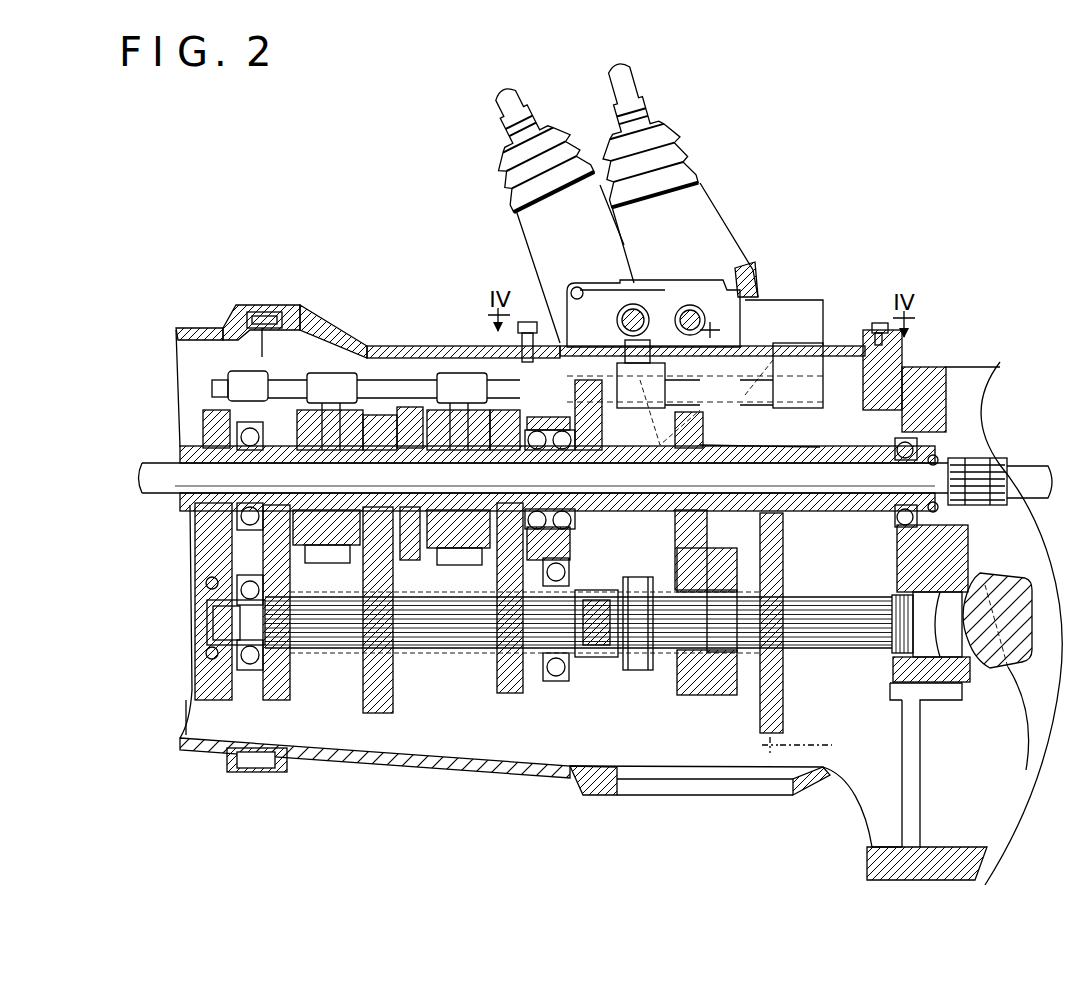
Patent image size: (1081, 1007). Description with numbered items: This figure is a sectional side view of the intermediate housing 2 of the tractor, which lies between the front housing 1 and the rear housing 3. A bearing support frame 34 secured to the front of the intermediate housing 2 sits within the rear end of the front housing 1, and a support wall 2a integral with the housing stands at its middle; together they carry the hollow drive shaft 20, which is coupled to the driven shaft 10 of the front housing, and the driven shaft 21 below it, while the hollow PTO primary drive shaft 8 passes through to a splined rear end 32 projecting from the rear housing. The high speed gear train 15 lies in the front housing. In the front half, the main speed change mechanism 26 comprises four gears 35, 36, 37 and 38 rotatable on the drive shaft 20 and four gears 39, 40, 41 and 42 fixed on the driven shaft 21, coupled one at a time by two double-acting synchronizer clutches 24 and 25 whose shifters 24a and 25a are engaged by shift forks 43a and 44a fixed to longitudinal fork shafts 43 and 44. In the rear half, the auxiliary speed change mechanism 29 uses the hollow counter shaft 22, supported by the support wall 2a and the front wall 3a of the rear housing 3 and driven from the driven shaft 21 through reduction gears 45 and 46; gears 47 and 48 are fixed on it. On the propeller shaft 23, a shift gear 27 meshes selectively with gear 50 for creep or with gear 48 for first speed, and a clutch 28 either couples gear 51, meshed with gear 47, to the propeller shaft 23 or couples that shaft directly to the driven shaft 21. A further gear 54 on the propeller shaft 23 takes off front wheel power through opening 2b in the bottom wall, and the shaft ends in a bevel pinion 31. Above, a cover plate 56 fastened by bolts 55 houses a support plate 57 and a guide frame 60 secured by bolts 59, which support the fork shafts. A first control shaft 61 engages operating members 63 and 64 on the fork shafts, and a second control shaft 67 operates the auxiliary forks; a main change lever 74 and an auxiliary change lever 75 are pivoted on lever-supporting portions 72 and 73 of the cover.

The front housing 1 is at (215, 328).
The intermediate housing 2 is at (563, 780).
The support wall 2a is at (562, 668).
The opening 2b is at (790, 790).
The rear housing 3 is at (970, 860).
The front wall 3a is at (960, 400).
The primary drive shaft 8 is at (162, 490).
The driven shaft 10 is at (185, 440).
The high speed gear train 15 is at (200, 732).
The drive shaft 20 is at (495, 412).
The driven shaft 21 is at (328, 620).
The counter shaft 22 is at (885, 378).
The propeller shaft 23 is at (832, 640).
The double-acting synchronizer clutch 24 is at (332, 410).
The shifter 24a is at (326, 550).
The double-acting synchronizer clutch 25 is at (445, 395).
The shifter 25a is at (455, 552).
The main speed change mechanism 26 is at (450, 668).
The shift gear 27 is at (790, 550).
The clutch 28 is at (640, 672).
The auxiliary speed change mechanism 29 is at (903, 440).
The bevel pinion 31 is at (992, 640).
The output spline 32 is at (1025, 480).
The bearing support frame 34 is at (205, 585).
The gear 35 is at (375, 415).
The gear 36 is at (258, 312).
The gear 37 is at (545, 430).
The gear 38 is at (387, 407).
The gear 39 is at (556, 410).
The gear 40 is at (257, 773).
The gear 41 is at (505, 695).
The gear 42 is at (380, 714).
The fork shaft 43 is at (785, 289).
The shift fork 43a is at (255, 371).
The fork shaft 44 is at (780, 400).
The shift fork 44a is at (465, 373).
The gear 45 is at (598, 660).
The gear 46 is at (588, 378).
The gear 47 is at (700, 417).
The gear 48 is at (823, 449).
The gear 50 is at (815, 746).
The gear 51 is at (690, 697).
The gear 54 is at (722, 697).
The bolts 55 is at (522, 322).
The cover plate 56 is at (712, 330).
The support plate 57 is at (775, 330).
The bolts 59 is at (800, 345).
The guide frame 60 is at (750, 265).
The first control shaft 61 is at (632, 340).
The operating member 63 is at (736, 216).
The operating member 64 is at (700, 300).
The second control shaft 67 is at (706, 322).
The first lever-supporting portion 72 is at (752, 268).
The second lever-supporting portion 73 is at (590, 193).
The main change lever 74 is at (632, 92).
The auxiliary change lever 75 is at (500, 112).